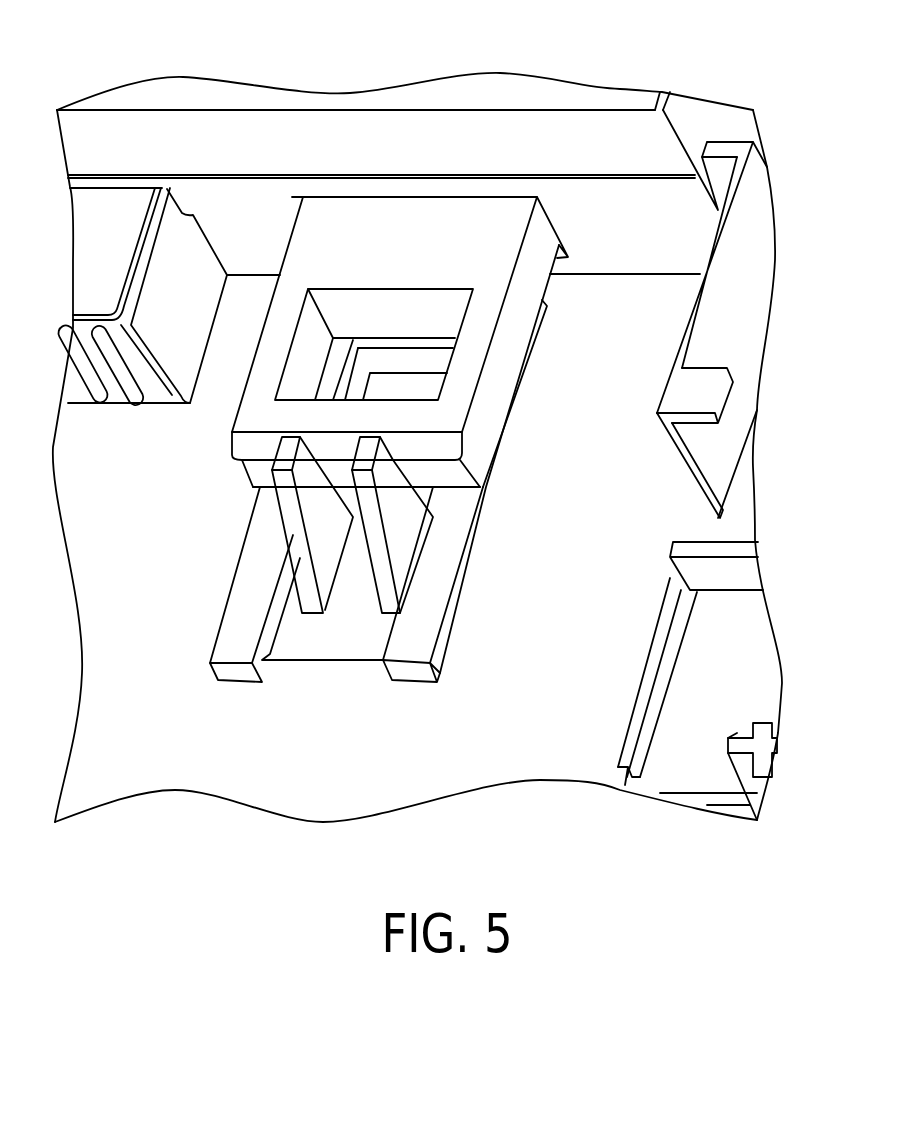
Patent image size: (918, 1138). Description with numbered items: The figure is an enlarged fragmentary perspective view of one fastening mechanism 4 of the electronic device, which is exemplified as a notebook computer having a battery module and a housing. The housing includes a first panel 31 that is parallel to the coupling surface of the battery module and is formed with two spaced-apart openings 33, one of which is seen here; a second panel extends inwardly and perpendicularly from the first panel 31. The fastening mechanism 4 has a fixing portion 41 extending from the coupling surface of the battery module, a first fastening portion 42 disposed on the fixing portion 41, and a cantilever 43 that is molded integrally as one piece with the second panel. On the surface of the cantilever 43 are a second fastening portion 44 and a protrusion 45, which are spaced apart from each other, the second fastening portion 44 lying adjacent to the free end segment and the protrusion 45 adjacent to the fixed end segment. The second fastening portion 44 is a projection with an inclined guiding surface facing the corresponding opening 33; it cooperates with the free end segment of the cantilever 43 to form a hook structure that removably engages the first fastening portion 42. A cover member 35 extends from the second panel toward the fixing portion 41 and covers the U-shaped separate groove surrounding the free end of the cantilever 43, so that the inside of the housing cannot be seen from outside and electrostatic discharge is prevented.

The first panel 31 is at (605, 230).
The opening 33 is at (387, 190).
The cover member 35 is at (418, 647).
The fastening mechanism 4 is at (392, 395).
The fixing portion 41 is at (458, 223).
The first fastening portion 42 is at (345, 314).
The cantilever 43 is at (335, 638).
The second fastening portion 44 is at (415, 385).
The protrusion 45 is at (290, 527).